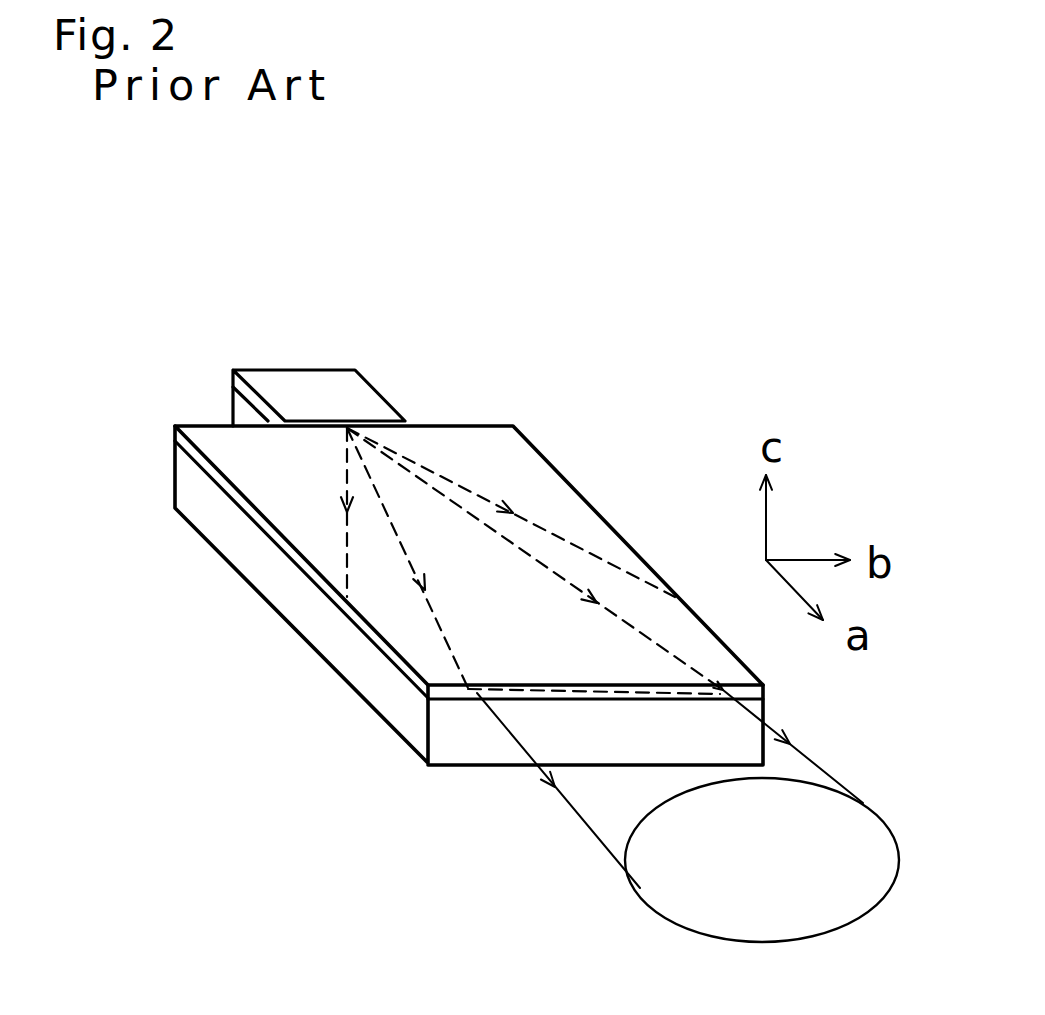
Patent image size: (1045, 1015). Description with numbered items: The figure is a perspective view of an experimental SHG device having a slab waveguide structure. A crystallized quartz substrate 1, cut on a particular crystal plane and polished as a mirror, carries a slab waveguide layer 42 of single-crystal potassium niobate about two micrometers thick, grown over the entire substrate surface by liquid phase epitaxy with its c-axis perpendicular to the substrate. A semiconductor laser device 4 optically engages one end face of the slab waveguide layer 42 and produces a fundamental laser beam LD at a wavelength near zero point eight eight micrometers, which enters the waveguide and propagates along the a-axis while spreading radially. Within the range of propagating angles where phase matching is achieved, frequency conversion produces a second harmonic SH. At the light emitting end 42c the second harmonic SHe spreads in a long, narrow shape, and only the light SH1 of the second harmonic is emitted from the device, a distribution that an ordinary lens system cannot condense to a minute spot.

The crystallized quartz substrate 1 is at (192, 493).
The slab waveguide layer 42 is at (175, 425).
The semiconductor laser device 4 is at (310, 383).
The light emitting end 42c is at (452, 690).
The laser beam LD is at (535, 525).
The second harmonic SH is at (617, 617).
The second harmonic at light emitting end SHe is at (523, 693).
The emitted second harmonic light SH1 is at (810, 758).